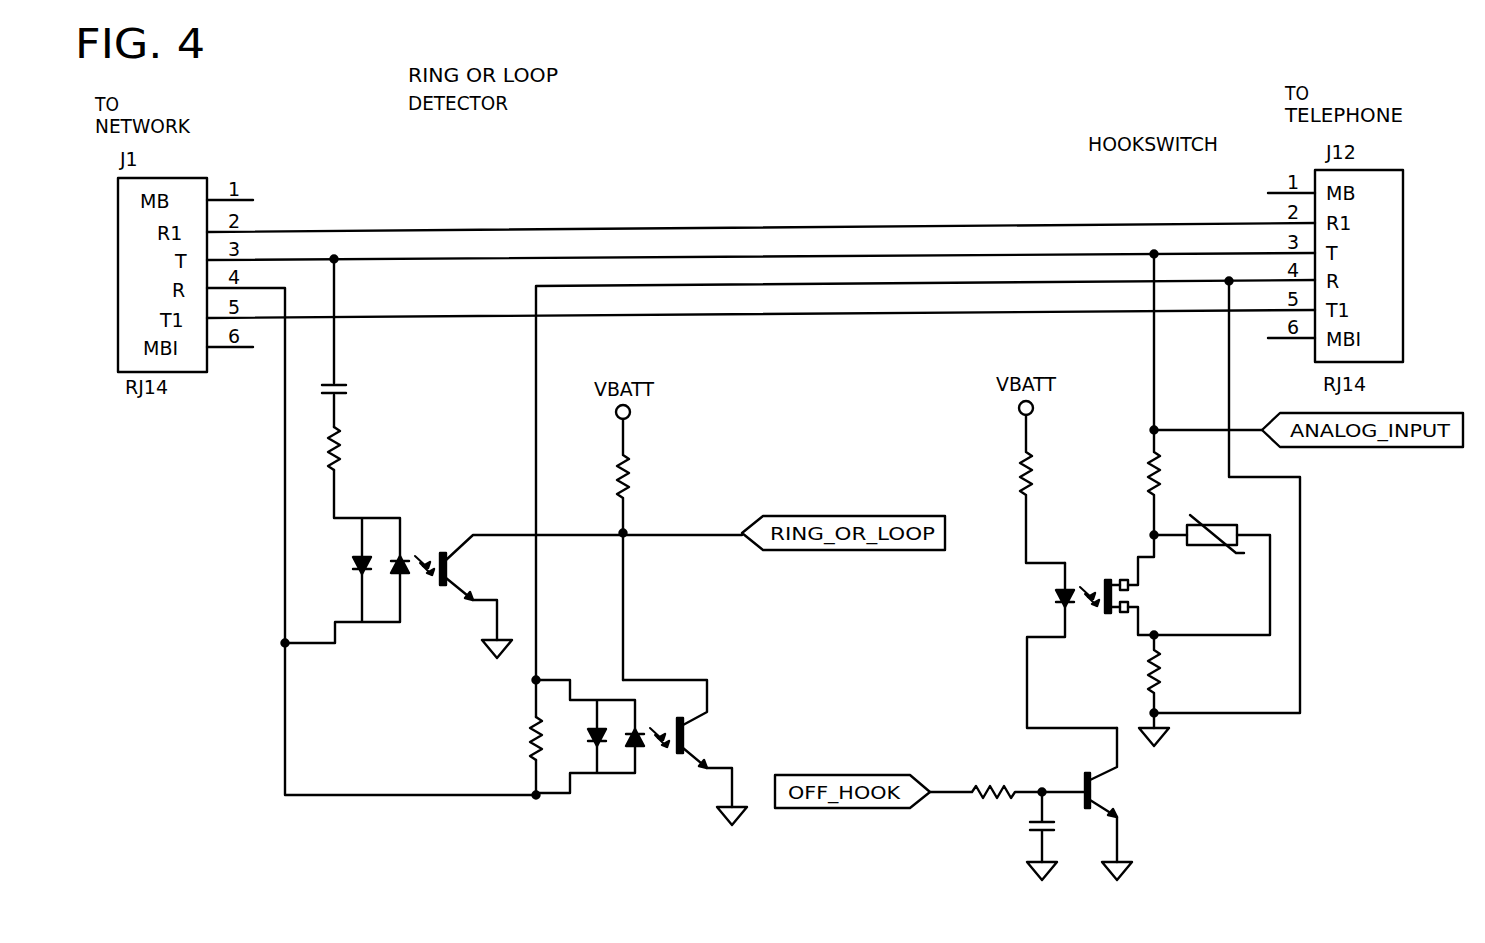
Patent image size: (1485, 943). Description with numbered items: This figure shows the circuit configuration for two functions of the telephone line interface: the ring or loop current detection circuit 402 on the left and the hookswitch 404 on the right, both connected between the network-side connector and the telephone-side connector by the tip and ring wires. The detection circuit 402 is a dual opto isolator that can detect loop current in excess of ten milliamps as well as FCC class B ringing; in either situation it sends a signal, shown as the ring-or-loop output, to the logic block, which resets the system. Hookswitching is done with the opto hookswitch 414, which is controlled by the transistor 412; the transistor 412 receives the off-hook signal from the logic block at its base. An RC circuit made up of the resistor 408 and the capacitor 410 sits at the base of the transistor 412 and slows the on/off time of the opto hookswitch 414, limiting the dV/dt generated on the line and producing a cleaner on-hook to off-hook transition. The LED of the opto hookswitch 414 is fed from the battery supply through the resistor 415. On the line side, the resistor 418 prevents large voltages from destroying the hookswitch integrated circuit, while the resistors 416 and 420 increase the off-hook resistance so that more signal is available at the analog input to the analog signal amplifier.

The ring or loop current detection circuit 402 is at (273, 560).
The hookswitch 404 is at (1333, 597).
The resistor of RC circuit 408 is at (995, 785).
The capacitor of RC circuit 410 is at (1022, 824).
The transistor 412 is at (1105, 785).
The opto hookswitch 414 is at (1100, 637).
The resistor 415 is at (1015, 478).
The resistor 416 is at (1170, 470).
The resistor 418 is at (1213, 550).
The resistor 420 is at (1172, 667).